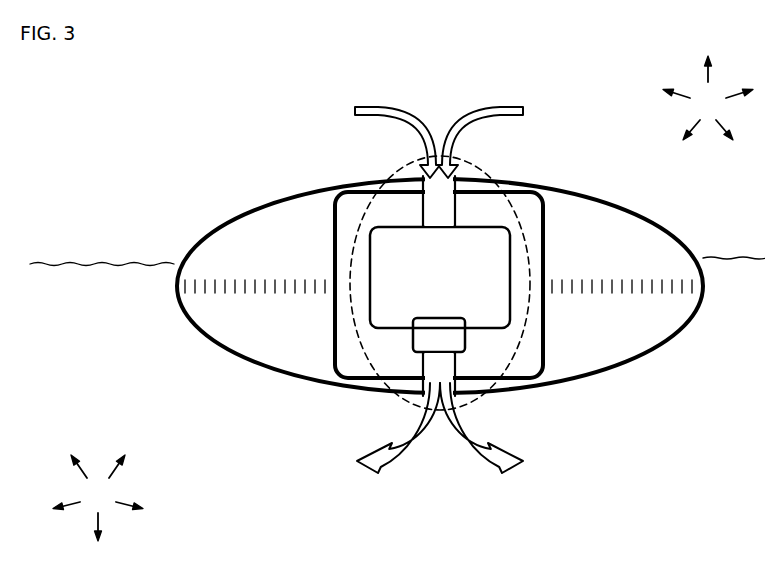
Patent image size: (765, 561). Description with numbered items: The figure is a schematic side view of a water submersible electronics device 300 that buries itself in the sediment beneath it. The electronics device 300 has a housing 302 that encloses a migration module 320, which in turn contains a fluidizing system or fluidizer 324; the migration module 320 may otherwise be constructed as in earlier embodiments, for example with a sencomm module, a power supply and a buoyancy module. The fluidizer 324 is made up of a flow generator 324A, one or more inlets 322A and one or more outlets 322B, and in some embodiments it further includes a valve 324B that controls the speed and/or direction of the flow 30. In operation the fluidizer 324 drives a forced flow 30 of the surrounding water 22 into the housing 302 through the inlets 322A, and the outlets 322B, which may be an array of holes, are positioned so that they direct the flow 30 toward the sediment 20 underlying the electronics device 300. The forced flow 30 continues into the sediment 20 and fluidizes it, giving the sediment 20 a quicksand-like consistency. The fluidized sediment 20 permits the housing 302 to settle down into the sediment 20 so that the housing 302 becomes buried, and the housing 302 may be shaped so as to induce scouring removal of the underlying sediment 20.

The electronics device 300 is at (162, 146).
The housing 302 is at (178, 314).
The migration module 320 is at (326, 330).
The inlet 322A is at (422, 213).
The outlet 322B is at (422, 365).
The fluidizer 324 is at (506, 165).
The flow generator 324A is at (490, 248).
The valve 324B is at (462, 338).
The forced flow 30 is at (376, 118).
The water 22 is at (708, 98).
The sediment 20 is at (98, 498).